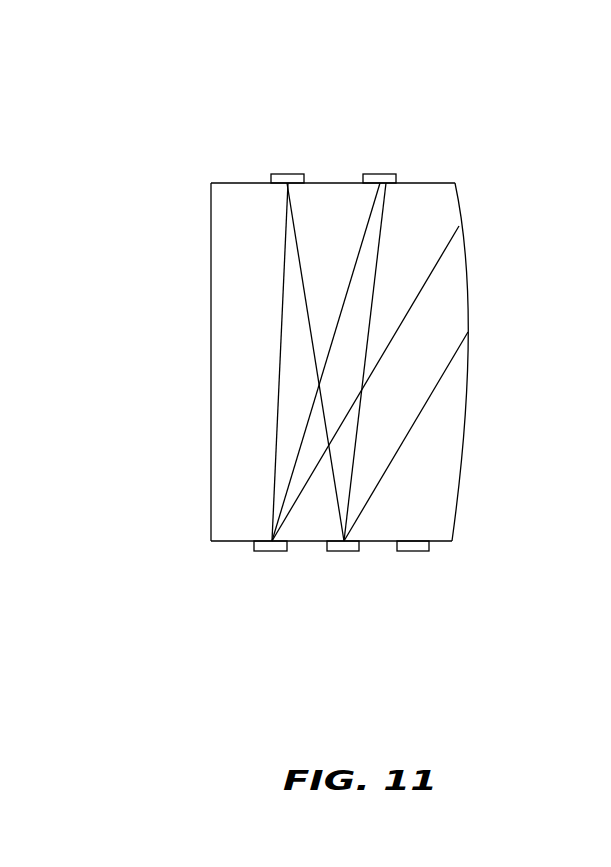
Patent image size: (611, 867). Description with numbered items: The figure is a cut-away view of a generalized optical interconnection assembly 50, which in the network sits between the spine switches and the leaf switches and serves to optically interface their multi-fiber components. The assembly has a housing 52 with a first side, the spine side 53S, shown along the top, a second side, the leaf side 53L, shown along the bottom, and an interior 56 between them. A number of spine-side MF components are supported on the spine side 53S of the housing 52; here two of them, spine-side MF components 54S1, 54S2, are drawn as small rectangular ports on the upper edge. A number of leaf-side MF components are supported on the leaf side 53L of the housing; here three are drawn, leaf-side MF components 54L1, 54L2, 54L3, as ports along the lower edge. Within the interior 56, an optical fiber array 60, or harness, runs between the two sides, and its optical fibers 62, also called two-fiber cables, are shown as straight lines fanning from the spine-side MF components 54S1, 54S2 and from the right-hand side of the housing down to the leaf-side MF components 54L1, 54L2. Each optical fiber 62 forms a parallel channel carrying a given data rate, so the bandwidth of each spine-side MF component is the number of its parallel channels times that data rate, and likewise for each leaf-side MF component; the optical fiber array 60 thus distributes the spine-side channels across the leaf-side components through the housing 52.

The optical interconnection assembly 50 is at (138, 109).
The housing 52 is at (211, 448).
The first side (spine side) 53S is at (436, 183).
The second side (leaf side) 53L is at (447, 541).
The spine-side MF component 54S1 is at (286, 174).
The spine-side MF component 54S2 is at (378, 174).
The leaf-side MF component 54L1 is at (268, 551).
The leaf-side MF component 54L2 is at (342, 551).
The leaf-side MF component 54L3 is at (411, 551).
The interior 56 is at (237, 381).
The optical fiber array 60 is at (270, 290).
The optical fibers 62 is at (437, 383).